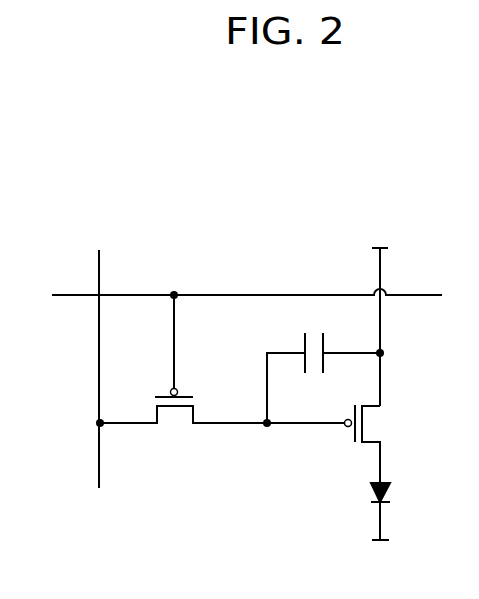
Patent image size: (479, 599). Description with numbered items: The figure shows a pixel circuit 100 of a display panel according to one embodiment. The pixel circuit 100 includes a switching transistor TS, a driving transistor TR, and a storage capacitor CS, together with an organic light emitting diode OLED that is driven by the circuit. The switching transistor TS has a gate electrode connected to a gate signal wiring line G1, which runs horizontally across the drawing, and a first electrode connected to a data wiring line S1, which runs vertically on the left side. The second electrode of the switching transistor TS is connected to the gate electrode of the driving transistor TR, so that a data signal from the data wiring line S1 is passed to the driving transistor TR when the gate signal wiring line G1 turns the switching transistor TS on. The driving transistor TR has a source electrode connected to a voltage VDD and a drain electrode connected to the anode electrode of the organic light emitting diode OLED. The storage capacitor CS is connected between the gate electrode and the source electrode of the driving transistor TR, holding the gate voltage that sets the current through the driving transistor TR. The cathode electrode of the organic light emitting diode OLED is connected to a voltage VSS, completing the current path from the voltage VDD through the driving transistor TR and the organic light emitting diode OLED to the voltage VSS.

The pixel circuit 100 is at (250, 221).
The data wiring line S1 is at (99, 353).
The gate signal wiring line G1 is at (232, 299).
The voltage VDD is at (380, 313).
The switching transistor TS is at (183, 369).
The driving transistor TR is at (331, 444).
The storage capacitor CS is at (323, 378).
The organic light emitting diode OLED is at (409, 509).
The voltage VSS is at (380, 557).